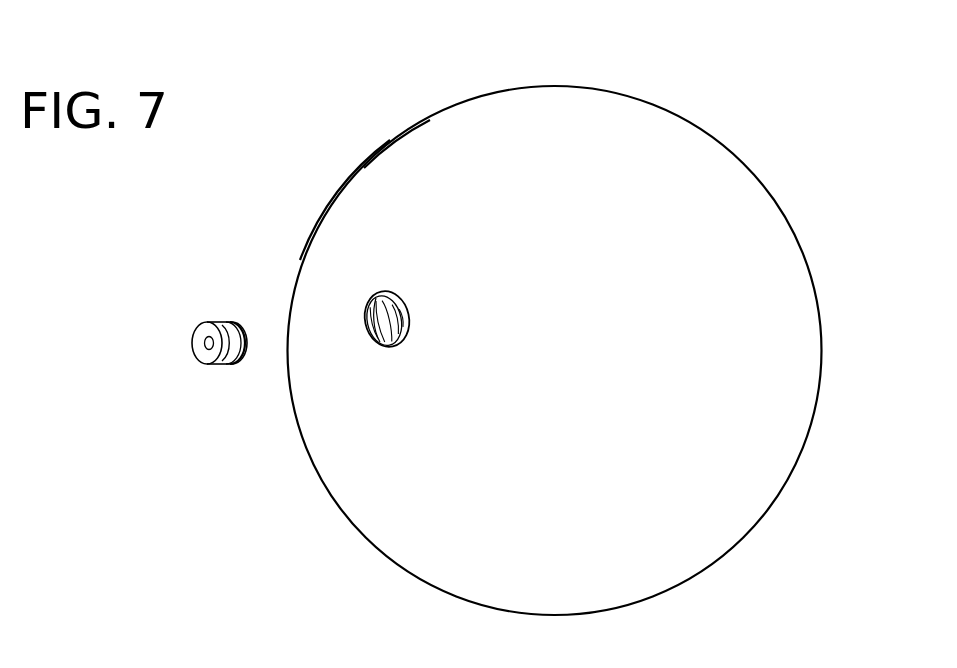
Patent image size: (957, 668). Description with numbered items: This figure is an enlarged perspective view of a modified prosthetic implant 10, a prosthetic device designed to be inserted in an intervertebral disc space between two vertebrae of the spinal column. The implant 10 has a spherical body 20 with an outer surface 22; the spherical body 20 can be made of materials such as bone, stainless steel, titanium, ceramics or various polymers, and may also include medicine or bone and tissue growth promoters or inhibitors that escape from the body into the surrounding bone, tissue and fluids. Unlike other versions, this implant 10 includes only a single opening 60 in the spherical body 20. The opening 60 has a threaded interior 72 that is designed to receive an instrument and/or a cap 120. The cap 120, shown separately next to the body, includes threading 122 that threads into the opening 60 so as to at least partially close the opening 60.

The prosthetic implant 10 is at (406, 96).
The spherical body 20 is at (362, 167).
The outer surface 22 is at (360, 208).
The opening 60 is at (383, 296).
The threaded interior 72 is at (372, 320).
The cap 120 is at (242, 351).
The threading 122 is at (223, 326).